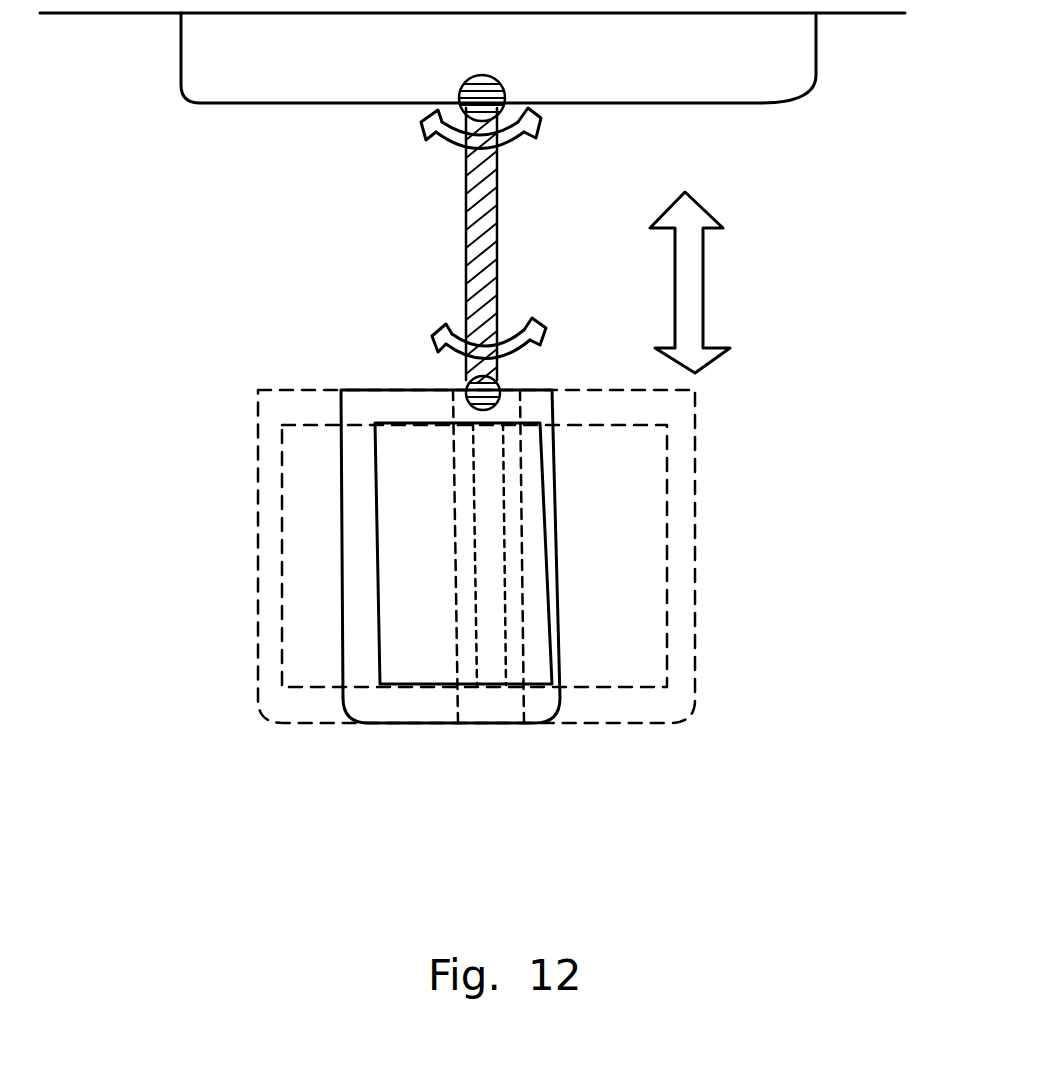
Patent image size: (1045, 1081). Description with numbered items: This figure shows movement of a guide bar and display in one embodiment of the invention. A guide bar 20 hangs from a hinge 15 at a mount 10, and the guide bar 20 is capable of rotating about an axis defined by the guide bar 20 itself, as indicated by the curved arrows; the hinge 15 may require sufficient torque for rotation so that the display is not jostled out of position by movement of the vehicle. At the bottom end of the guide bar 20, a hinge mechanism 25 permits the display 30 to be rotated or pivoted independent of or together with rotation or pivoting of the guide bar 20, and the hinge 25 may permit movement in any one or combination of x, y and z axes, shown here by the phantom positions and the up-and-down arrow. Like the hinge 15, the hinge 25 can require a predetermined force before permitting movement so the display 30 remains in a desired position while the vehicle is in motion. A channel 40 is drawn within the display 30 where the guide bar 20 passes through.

The mounting plate 10 is at (783, 72).
The hinge 15 is at (456, 100).
The guide bar 20 is at (468, 235).
The hinge mechanism 25 is at (467, 388).
The display 30 is at (417, 655).
The channel 40 is at (492, 660).